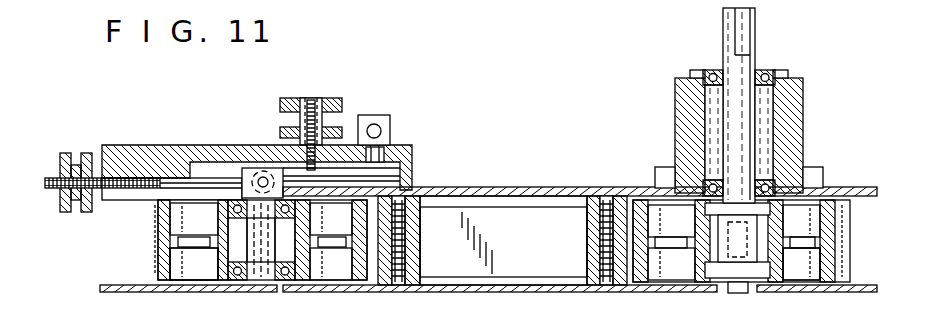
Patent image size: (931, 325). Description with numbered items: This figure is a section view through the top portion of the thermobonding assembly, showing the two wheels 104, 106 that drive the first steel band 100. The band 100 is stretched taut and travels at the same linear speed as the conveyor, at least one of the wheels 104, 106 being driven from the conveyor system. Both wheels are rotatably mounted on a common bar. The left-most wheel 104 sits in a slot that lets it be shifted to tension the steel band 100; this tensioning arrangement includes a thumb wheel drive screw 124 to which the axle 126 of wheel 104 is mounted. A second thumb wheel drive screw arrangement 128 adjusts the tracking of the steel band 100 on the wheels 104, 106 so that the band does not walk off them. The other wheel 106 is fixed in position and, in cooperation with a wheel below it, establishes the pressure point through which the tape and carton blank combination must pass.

The first steel band 100 is at (157, 233).
The wheel 104 is at (160, 262).
The wheel 106 is at (828, 255).
The thumb wheel drive screw 124 is at (78, 140).
The axle 126 is at (257, 273).
The second thumb wheel drive screw arrangement 128 is at (328, 120).